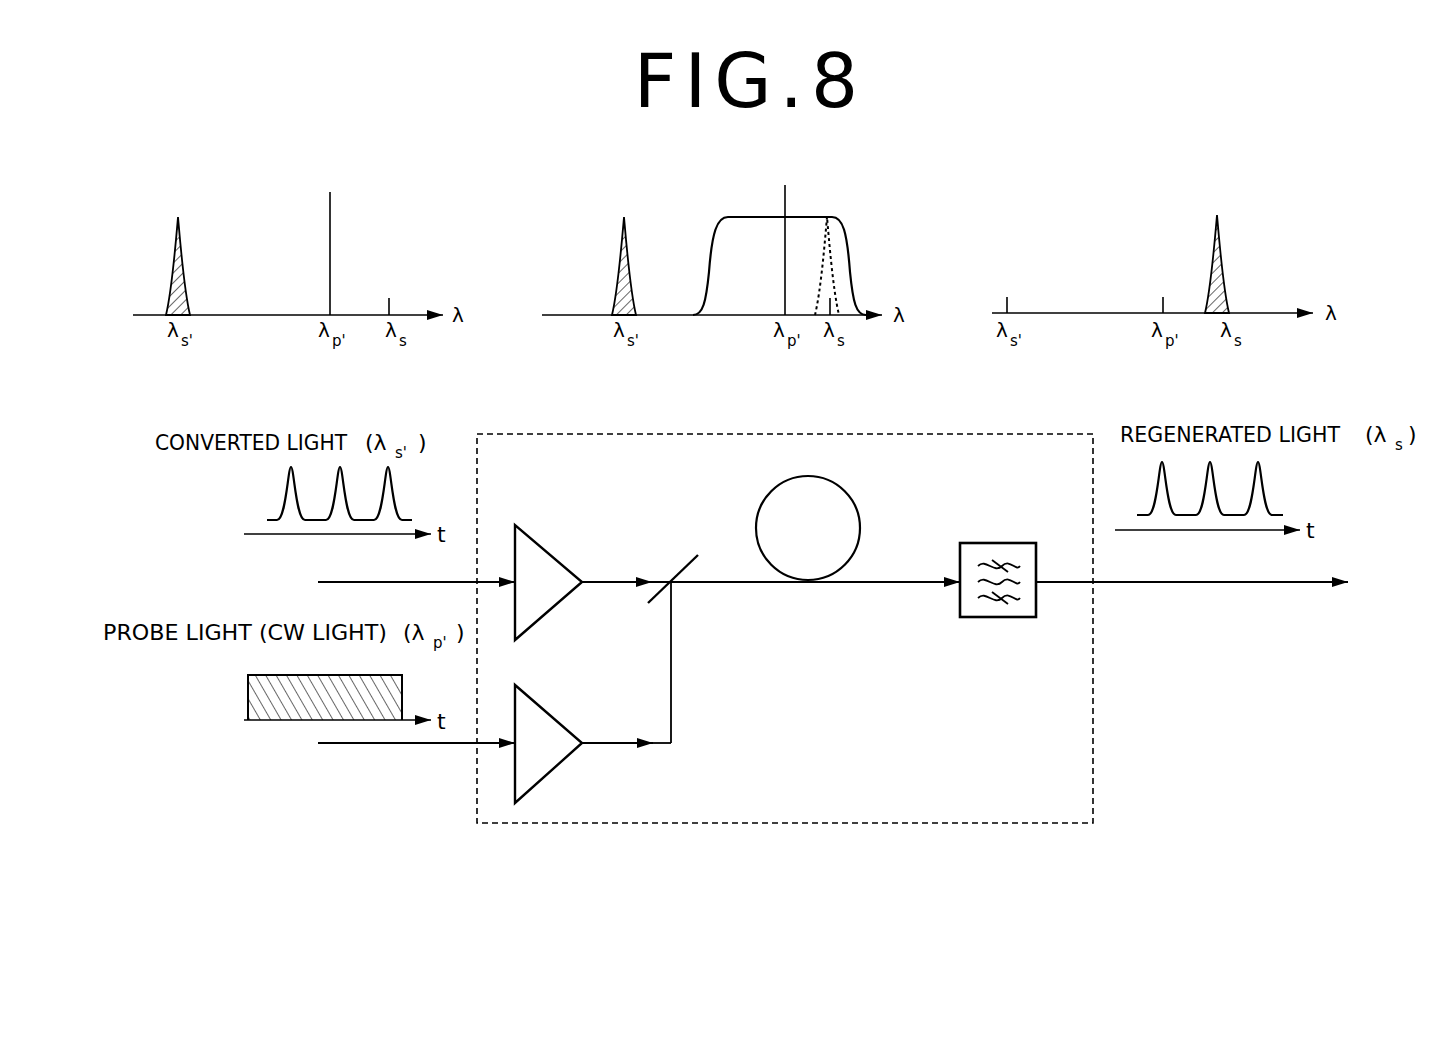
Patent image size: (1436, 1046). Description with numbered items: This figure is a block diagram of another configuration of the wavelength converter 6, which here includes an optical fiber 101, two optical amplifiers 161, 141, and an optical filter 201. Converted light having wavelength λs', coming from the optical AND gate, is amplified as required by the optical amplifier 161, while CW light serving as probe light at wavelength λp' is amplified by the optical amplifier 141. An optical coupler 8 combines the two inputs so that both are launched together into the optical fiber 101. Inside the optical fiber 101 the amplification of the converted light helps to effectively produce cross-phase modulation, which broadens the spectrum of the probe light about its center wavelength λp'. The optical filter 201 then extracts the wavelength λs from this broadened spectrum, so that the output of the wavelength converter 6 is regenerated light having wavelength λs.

The wavelength converter 6 is at (793, 823).
The optical amplifier 161 is at (553, 553).
The optical amplifier 141 is at (553, 718).
The optical coupler 8 is at (690, 557).
The optical fiber 101 is at (860, 515).
The optical filter 201 is at (997, 543).